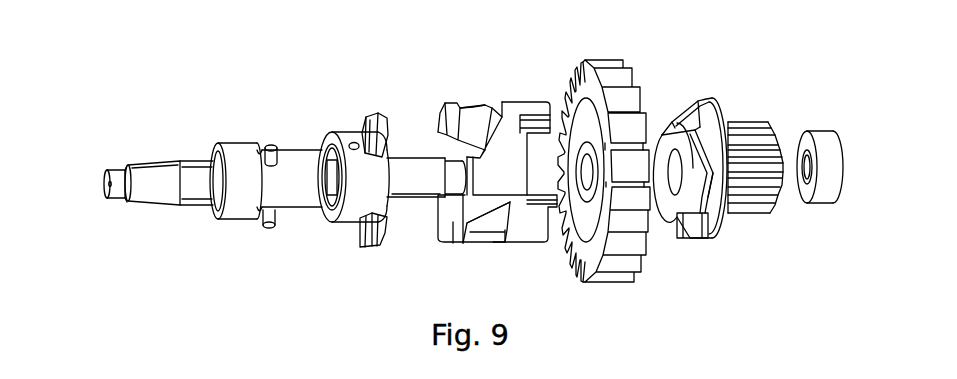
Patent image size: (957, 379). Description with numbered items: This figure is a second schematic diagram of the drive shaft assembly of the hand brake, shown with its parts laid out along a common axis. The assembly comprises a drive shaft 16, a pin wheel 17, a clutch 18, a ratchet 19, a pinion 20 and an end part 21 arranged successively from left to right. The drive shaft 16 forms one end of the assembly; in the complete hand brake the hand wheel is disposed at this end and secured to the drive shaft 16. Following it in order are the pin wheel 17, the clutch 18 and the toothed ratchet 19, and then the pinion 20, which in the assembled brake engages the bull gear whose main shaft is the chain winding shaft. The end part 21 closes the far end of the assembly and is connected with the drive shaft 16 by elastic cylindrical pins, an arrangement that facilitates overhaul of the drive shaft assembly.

The drive shaft 16 is at (242, 157).
The pin wheel 17 is at (345, 147).
The clutch 18 is at (510, 115).
The ratchet 19 is at (575, 88).
The pinion 20 is at (707, 102).
The end part 21 is at (825, 147).